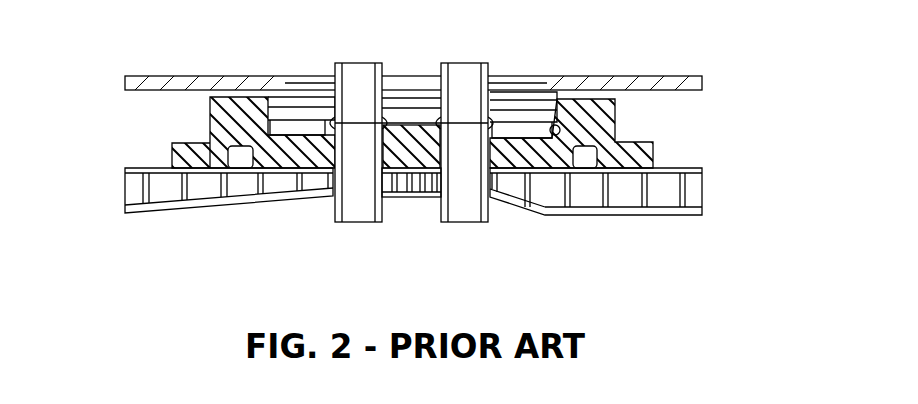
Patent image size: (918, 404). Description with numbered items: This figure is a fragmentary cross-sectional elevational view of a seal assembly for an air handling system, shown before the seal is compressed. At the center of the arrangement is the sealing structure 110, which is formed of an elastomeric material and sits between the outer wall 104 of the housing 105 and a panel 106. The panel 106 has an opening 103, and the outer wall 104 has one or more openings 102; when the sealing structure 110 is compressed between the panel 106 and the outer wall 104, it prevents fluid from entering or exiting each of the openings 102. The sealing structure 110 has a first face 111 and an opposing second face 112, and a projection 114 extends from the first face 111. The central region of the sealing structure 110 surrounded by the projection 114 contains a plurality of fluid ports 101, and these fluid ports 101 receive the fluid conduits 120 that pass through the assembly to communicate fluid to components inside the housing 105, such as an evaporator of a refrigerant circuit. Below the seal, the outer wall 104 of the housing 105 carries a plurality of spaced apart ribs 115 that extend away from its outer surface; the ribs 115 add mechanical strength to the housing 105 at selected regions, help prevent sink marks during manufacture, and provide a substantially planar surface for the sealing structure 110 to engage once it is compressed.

The fluid ports 101 is at (317, 128).
The openings 102 is at (490, 195).
The opening 103 is at (540, 86).
The outer wall 104 is at (175, 206).
The housing 105 is at (414, 190).
The panel 106 is at (165, 77).
The sealing structure 110 is at (634, 132).
The first face 111 is at (240, 97).
The second face 112 is at (228, 193).
The projection 114 is at (592, 103).
The ribs 115 is at (175, 153).
The fluid conduits 120 is at (462, 223).